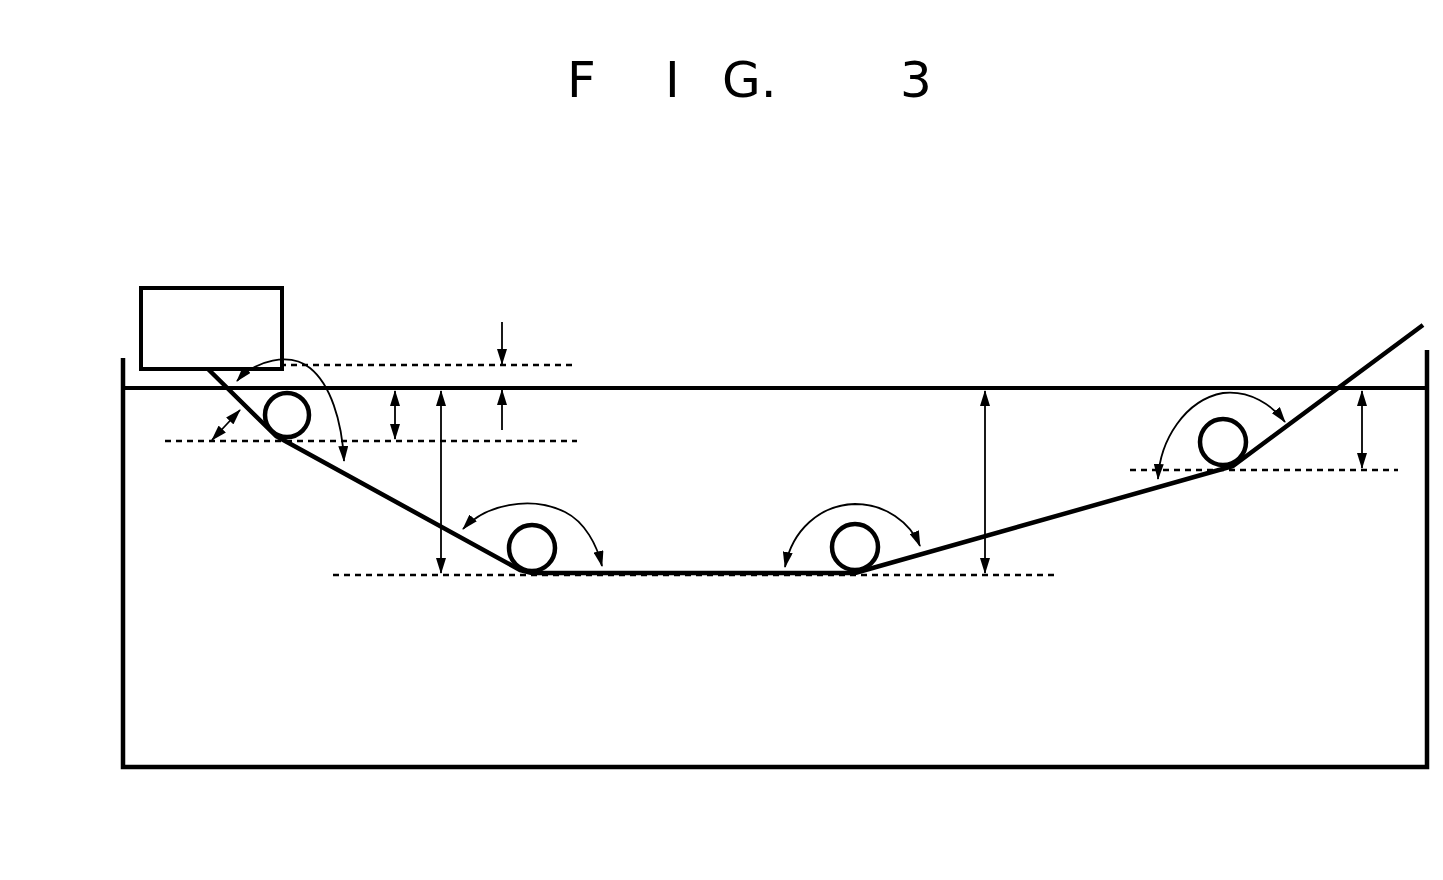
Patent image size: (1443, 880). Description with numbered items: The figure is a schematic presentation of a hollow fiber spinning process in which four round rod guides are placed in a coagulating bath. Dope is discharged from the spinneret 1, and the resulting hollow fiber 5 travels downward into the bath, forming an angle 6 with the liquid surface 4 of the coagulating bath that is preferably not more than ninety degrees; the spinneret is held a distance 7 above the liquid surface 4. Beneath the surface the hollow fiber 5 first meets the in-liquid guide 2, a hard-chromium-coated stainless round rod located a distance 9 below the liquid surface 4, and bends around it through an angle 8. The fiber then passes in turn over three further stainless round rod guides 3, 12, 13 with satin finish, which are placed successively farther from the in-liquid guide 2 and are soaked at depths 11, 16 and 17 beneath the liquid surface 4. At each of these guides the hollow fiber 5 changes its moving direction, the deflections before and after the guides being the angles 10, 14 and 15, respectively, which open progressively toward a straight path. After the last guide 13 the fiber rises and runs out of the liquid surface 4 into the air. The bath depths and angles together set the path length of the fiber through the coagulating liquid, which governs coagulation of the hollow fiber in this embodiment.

The spinneret 1 is at (287, 313).
The in-liquid guide 2 is at (288, 443).
The guide roll 3 is at (531, 581).
The liquid surface of coagulating bath 4 is at (773, 387).
The hollow fiber 5 is at (1080, 496).
The angle between hollow fiber and liquid surface 6 is at (211, 424).
The distance between spinneret and liquid surface 7 is at (428, 362).
The angle of hollow fiber before and after in-liquid guide 8 is at (290, 396).
The distance of in-liquid guide from liquid surface 9 is at (371, 435).
The angle of hollow fiber before and after guide 10 is at (532, 516).
The distance of guide from liquid surface 11 is at (695, 483).
The guide roll 12 is at (859, 579).
The guide roll 13 is at (1238, 473).
The angle of hollow fiber before and after guide 14 is at (852, 515).
The angle of hollow fiber before and after guide 15 is at (1202, 436).
The distance of guide from liquid surface 16 is at (1011, 482).
The distance of guide from liquid surface 17 is at (1268, 430).